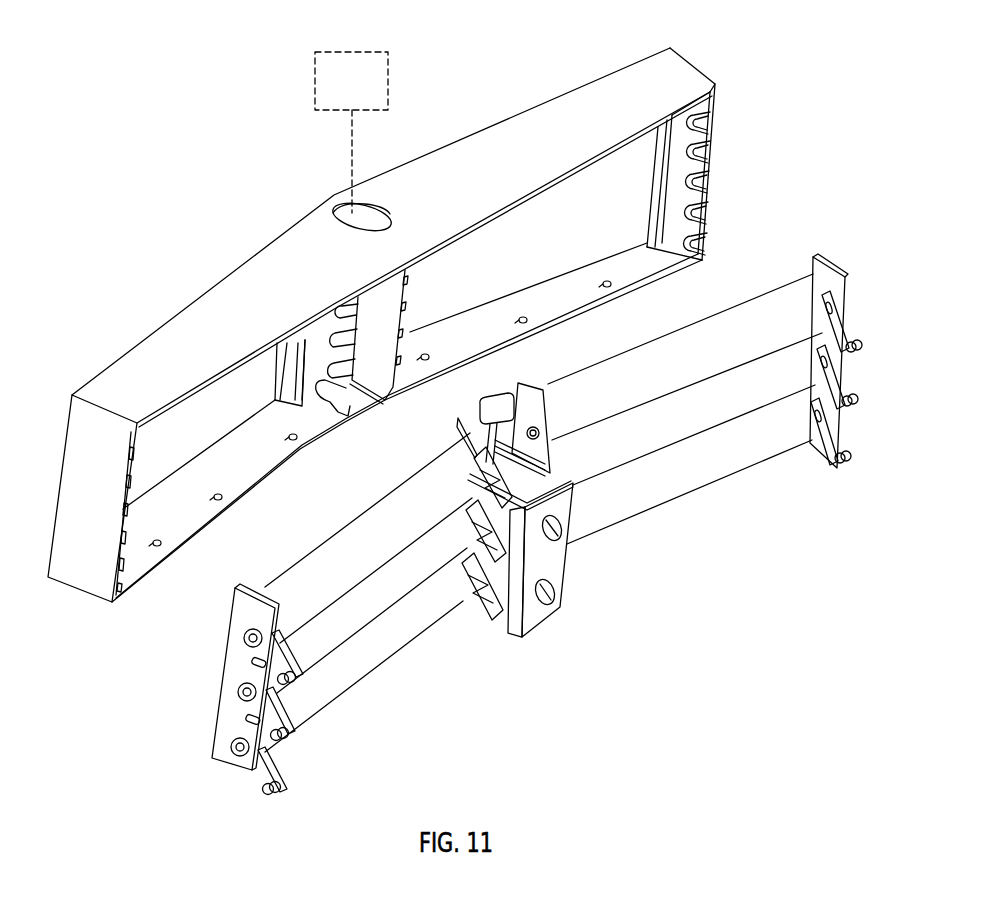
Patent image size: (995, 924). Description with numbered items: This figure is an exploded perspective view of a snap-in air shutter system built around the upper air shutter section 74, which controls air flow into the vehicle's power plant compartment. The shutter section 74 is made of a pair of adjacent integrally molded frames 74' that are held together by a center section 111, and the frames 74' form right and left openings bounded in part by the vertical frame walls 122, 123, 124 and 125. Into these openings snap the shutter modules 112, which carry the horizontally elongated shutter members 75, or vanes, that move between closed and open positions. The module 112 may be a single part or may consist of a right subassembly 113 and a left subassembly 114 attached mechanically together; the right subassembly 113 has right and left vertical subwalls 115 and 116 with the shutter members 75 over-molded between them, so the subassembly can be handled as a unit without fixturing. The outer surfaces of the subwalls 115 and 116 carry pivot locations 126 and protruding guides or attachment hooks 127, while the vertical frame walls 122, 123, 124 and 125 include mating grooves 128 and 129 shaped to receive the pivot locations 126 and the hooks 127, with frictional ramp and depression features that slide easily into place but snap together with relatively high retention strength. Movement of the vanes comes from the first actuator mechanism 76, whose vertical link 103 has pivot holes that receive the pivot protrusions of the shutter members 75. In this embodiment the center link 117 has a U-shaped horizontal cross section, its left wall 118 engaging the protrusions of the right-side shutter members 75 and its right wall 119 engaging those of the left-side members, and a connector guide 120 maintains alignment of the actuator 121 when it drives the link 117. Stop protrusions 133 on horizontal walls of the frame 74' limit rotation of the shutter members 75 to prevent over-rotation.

The upper air shutter section 74 is at (381, 331).
The frames 74' is at (393, 237).
The center section 111 is at (310, 212).
The actuator 121 is at (381, 50).
The vertical frame wall 122 is at (80, 573).
The vertical frame wall 123 is at (323, 348).
The vertical frame wall 124 is at (390, 293).
The vertical frame wall 125 is at (657, 160).
The mating groove 128 is at (343, 393).
The mating groove 129 is at (350, 360).
The stop protrusions 133 is at (158, 542).
The shutter module 112 is at (174, 782).
The right vertical subwall 115 is at (232, 620).
The pivot locations 126 is at (244, 638).
The guides/attachment hooks 127 is at (255, 727).
The shutter members 75 is at (323, 585).
The right subassembly 113 is at (493, 645).
The left subassembly 114 is at (813, 473).
The vertical link 103 is at (550, 630).
The center link 117 is at (550, 562).
The right wall 119 is at (560, 478).
The first actuator mechanism 76 is at (494, 391).
The connector guide 120 is at (480, 415).
The left vertical subwall 116 is at (460, 432).
The left wall 118 is at (500, 605).